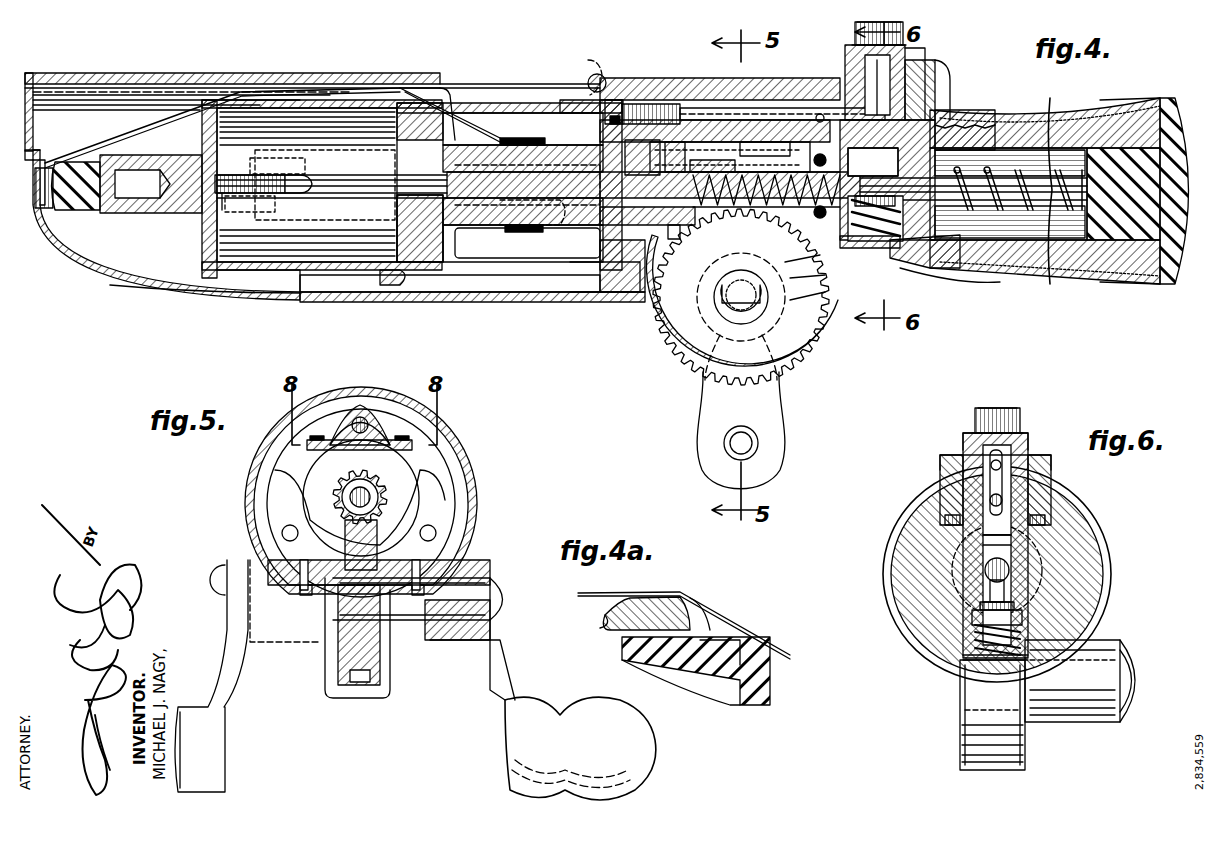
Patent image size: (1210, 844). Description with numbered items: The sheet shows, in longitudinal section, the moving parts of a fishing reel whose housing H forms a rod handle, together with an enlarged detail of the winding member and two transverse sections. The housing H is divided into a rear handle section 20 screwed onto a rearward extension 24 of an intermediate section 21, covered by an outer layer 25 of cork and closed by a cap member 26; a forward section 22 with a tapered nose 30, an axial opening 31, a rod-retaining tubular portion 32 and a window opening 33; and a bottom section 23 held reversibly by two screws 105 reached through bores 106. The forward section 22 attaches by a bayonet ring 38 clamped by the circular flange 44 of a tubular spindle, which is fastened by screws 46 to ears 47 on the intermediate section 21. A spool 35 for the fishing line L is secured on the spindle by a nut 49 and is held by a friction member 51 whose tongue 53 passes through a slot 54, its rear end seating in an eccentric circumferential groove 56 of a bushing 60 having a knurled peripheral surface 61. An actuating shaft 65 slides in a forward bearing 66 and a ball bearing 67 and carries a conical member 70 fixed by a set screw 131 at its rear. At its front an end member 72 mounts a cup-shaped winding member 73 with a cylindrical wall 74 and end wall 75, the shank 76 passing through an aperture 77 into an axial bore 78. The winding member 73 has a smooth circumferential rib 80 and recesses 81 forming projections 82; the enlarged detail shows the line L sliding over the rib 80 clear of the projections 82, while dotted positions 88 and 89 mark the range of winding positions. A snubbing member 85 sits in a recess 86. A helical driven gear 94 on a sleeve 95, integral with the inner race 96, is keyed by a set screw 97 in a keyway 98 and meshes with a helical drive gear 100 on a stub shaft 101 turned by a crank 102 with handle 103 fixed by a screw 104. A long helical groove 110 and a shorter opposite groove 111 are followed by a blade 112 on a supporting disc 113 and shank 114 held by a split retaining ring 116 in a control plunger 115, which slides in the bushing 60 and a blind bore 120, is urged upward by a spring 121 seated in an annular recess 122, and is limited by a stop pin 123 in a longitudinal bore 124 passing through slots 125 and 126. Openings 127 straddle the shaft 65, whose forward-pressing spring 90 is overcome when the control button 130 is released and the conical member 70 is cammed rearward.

In FIG. 4, the rear handle section 20 is at (1052, 118).
In FIG. 4, the intermediate section 21 is at (680, 78).
In FIG. 5, the intermediate section 21 is at (468, 492).
In FIG. 6, the intermediate section 21 is at (885, 575).
In FIG. 4, the forward section 22 is at (250, 73).
In FIG. 4, the bottom section 23 is at (815, 352).
In FIG. 5, the bottom section 23 is at (285, 578).
In FIG. 6, the bottom section 23 is at (958, 758).
In FIG. 4, the rearward extension 24 is at (1005, 128).
In FIG. 4, the outer layer 25 is at (1112, 112).
In FIG. 4, the cap member 26 is at (1160, 100).
In FIG. 4, the tapered nose 30 is at (45, 225).
In FIG. 4, the axial opening 31 is at (42, 200).
In FIG. 4, the tubular portion 32 is at (38, 73).
In FIG. 4, the opening 33 is at (500, 108).
In FIG. 4, the spool 35 is at (415, 290).
In FIG. 4A, the spool 35 is at (752, 705).
In FIG. 4, the bayonet ring 38 is at (615, 292).
In FIG. 4, the circular flange 44 is at (585, 292).
In FIG. 4, the screws 46 is at (640, 104).
In FIG. 5, the screws 46 is at (361, 420).
In FIG. 5, the ears 47 is at (395, 420).
In FIG. 4, the nut 49 is at (420, 228).
In FIG. 4, the friction member 51 is at (712, 159).
In FIG. 5, the friction member 51 is at (300, 445).
In FIG. 6, the friction member 51 is at (1048, 520).
In FIG. 4, the tongue 53 is at (585, 100).
In FIG. 4, the slot 54 is at (642, 157).
In FIG. 4, the eccentric circumferential groove 56 is at (980, 122).
In FIG. 6, the eccentric circumferential groove 56 is at (945, 518).
In FIG. 4, the bushing 60 is at (932, 68).
In FIG. 6, the bushing 60 is at (960, 455).
In FIG. 4, the knurled peripheral surface 61 is at (936, 85).
In FIG. 6, the knurled peripheral surface 61 is at (940, 462).
In FIG. 4, the actuating shaft 65 is at (340, 175).
In FIG. 5, the actuating shaft 65 is at (350, 496).
In FIG. 6, the actuating shaft 65 is at (999, 560).
In FIG. 4, the forward bearing 66 is at (462, 232).
In FIG. 4, the ball bearing 67 is at (814, 156).
In FIG. 4, the conical member 70 is at (940, 272).
In FIG. 4, the end member 72 is at (150, 213).
In FIG. 4, the winding member 73 is at (265, 295).
In FIG. 4A, the winding member 73 is at (600, 620).
In FIG. 4, the cylindrical wall 74 is at (312, 290).
In FIG. 4, the end wall 75 is at (202, 244).
In FIG. 4, the shank 76 is at (243, 195).
In FIG. 4, the aperture 77 is at (212, 180).
In FIG. 4, the axial bore 78 is at (276, 196).
In FIG. 4, the circumferential rib 80 is at (398, 286).
In FIG. 4A, the circumferential rib 80 is at (645, 600).
In FIG. 4A, the recesses 81 is at (700, 606).
In FIG. 4A, the projections 82 is at (732, 630).
In FIG. 4, the snubbing member 85 is at (75, 210).
In FIG. 4, the recess 86 is at (95, 210).
In FIG. 4, the winding position 88 is at (450, 88).
In FIG. 4, the further rearward winding position 89 is at (598, 69).
In FIG. 4, the spring 90 is at (1030, 206).
In FIG. 4, the helical driven gear 94 is at (728, 172).
In FIG. 5, the helical driven gear 94 is at (378, 484).
In FIG. 4, the sleeve 95 is at (765, 148).
In FIG. 4, the inner race 96 is at (873, 162).
In FIG. 4, the set screw 97 is at (677, 189).
In FIG. 4, the longitudinal keyway 98 is at (560, 172).
In FIG. 4, the helical drive gear 100 is at (668, 352).
In FIG. 5, the helical drive gear 100 is at (345, 698).
In FIG. 4, the stub shaft 101 is at (735, 303).
In FIG. 4, the crank 102 is at (782, 432).
In FIG. 5, the crank 102 is at (492, 672).
In FIG. 6, the crank 102 is at (1110, 722).
In FIG. 5, the handle 103 is at (596, 795).
In FIG. 5, the screw 104 is at (500, 598).
In FIG. 6, the screw 104 is at (1138, 672).
In FIG. 5, the screws 105 is at (398, 560).
In FIG. 5, the bores 106 is at (308, 596).
In FIG. 4, the helical groove 110 is at (887, 180).
In FIG. 6, the helical groove 110 is at (972, 615).
In FIG. 4, the shorter helical groove 111 is at (741, 304).
In FIG. 4, the follower blade 112 is at (796, 250).
In FIG. 6, the follower blade 112 is at (1005, 578).
In FIG. 4, the supporting disc 113 is at (806, 269).
In FIG. 6, the supporting disc 113 is at (1005, 602).
In FIG. 4, the shank 114 is at (805, 293).
In FIG. 6, the shank 114 is at (1014, 606).
In FIG. 4, the control plunger 115 is at (912, 50).
In FIG. 6, the control plunger 115 is at (962, 435).
In FIG. 4, the split retaining ring 116 is at (880, 241).
In FIG. 6, the split retaining ring 116 is at (975, 645).
In FIG. 6, the blind bore 120 is at (963, 650).
In FIG. 4, the spring 121 is at (858, 248).
In FIG. 6, the spring 121 is at (972, 658).
In FIG. 4, the annular recess 122 is at (925, 268).
In FIG. 6, the annular recess 122 is at (975, 628).
In FIG. 4, the stop pin 123 is at (762, 108).
In FIG. 6, the stop pin 123 is at (1005, 500).
In FIG. 4, the longitudinal bore 124 is at (690, 112).
In FIG. 4, the slot 125 is at (820, 112).
In FIG. 4, the slot 126 is at (850, 70).
In FIG. 6, the slot 126 is at (1012, 450).
In FIG. 4, the openings 127 is at (960, 112).
In FIG. 6, the openings 127 is at (955, 560).
In FIG. 4, the control button 130 is at (906, 32).
In FIG. 6, the control button 130 is at (1010, 410).
In FIG. 4, the set screw 131 is at (978, 198).
In FIG. 4, the housing H is at (360, 73).
In FIG. 4, the fishing line L is at (484, 84).
In FIG. 4A, the fishing line L is at (683, 592).